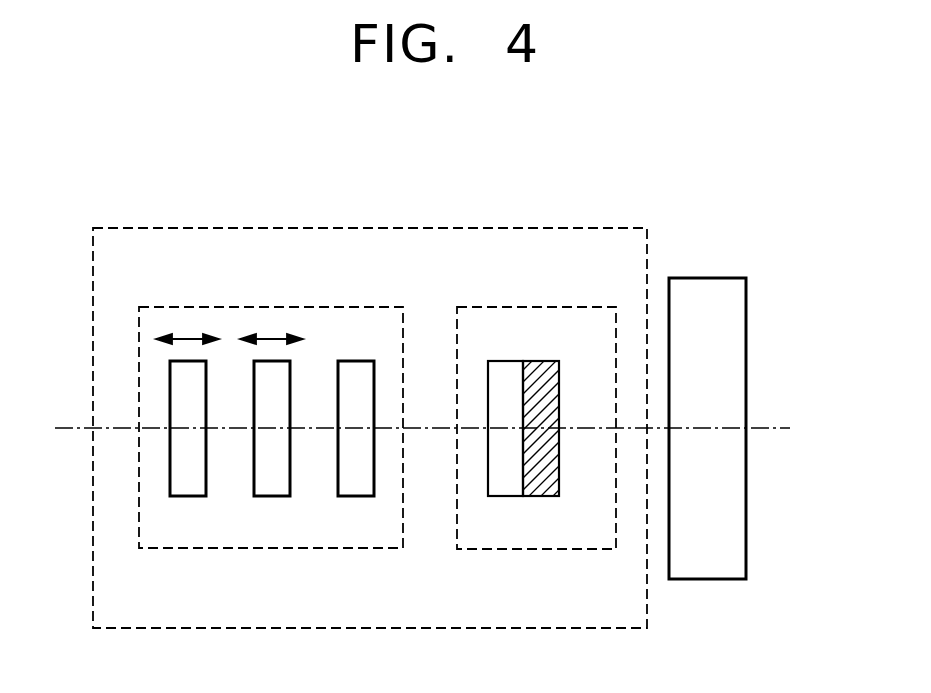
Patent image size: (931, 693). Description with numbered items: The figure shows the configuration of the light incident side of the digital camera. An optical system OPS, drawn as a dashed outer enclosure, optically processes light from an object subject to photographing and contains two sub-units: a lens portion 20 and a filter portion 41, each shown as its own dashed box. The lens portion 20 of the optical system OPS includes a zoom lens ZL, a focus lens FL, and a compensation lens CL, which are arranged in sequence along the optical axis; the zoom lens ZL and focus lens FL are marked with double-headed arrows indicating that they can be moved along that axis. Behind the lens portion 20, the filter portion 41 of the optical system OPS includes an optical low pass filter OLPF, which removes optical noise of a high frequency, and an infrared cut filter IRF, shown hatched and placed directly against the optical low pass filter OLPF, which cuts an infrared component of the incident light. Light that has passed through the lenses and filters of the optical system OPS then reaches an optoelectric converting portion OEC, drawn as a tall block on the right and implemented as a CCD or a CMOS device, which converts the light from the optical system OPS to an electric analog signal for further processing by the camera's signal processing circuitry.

The optical system OPS is at (370, 228).
The lens portion 20 is at (272, 307).
The filter portion 41 is at (540, 307).
The zoom lens ZL is at (187, 497).
The focus lens FL is at (272, 497).
The compensation lens CL is at (356, 497).
The optical low pass filter OLPF is at (500, 497).
The infrared cut filter IRF is at (545, 497).
The optoelectric converting portion OEC is at (706, 277).